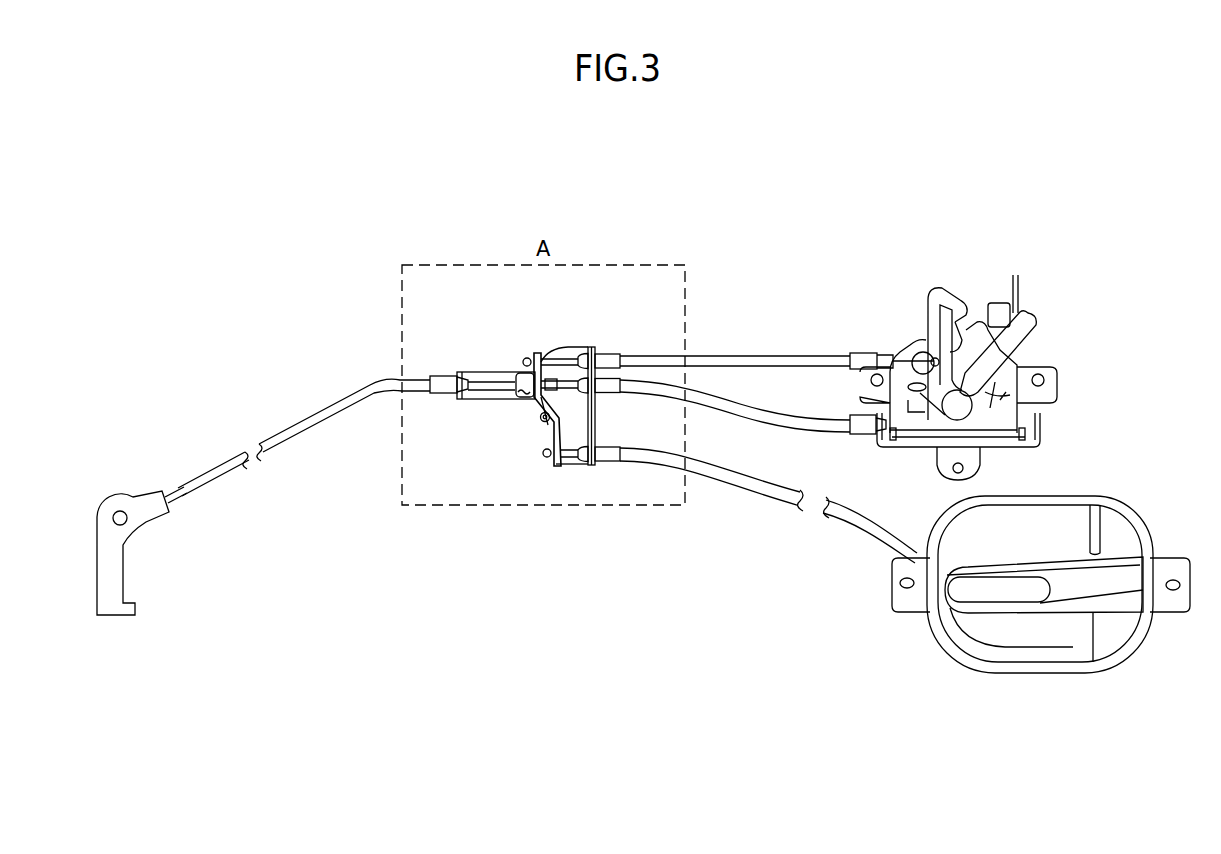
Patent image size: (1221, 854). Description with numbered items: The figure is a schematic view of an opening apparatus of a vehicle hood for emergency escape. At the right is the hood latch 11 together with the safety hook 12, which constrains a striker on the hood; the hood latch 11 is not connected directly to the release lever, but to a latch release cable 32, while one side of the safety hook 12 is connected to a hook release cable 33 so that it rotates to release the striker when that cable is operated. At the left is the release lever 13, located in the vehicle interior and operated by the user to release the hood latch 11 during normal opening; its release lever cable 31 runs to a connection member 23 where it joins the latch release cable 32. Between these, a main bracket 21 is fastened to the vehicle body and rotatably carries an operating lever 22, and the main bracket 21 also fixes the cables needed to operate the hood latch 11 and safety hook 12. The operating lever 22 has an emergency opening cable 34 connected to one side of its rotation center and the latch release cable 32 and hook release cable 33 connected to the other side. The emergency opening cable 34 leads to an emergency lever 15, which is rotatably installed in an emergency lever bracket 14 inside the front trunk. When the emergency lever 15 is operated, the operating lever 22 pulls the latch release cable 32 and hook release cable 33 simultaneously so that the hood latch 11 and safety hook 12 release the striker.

The hood latch 11 is at (1053, 416).
The safety hook 12 is at (1010, 345).
The release lever 13 is at (115, 565).
The emergency lever bracket 14 is at (1063, 522).
The emergency lever 15 is at (1067, 595).
The main bracket 21 is at (578, 412).
The operating lever 22 is at (552, 426).
The connection member 23 is at (522, 378).
The release lever cable 31 is at (324, 413).
The latch release cable 32 is at (772, 417).
The hook release cable 33 is at (735, 357).
The emergency opening cable 34 is at (770, 488).